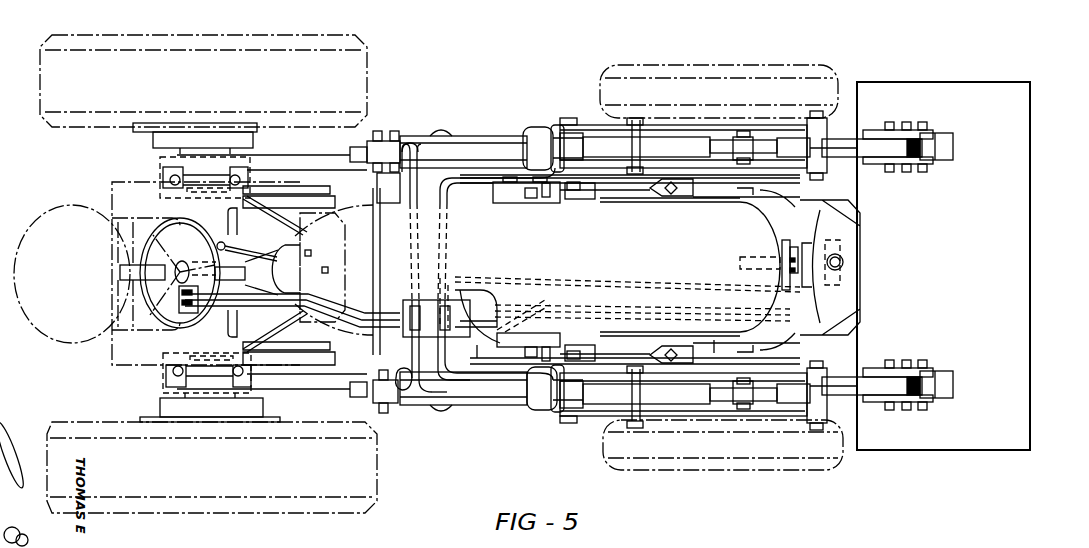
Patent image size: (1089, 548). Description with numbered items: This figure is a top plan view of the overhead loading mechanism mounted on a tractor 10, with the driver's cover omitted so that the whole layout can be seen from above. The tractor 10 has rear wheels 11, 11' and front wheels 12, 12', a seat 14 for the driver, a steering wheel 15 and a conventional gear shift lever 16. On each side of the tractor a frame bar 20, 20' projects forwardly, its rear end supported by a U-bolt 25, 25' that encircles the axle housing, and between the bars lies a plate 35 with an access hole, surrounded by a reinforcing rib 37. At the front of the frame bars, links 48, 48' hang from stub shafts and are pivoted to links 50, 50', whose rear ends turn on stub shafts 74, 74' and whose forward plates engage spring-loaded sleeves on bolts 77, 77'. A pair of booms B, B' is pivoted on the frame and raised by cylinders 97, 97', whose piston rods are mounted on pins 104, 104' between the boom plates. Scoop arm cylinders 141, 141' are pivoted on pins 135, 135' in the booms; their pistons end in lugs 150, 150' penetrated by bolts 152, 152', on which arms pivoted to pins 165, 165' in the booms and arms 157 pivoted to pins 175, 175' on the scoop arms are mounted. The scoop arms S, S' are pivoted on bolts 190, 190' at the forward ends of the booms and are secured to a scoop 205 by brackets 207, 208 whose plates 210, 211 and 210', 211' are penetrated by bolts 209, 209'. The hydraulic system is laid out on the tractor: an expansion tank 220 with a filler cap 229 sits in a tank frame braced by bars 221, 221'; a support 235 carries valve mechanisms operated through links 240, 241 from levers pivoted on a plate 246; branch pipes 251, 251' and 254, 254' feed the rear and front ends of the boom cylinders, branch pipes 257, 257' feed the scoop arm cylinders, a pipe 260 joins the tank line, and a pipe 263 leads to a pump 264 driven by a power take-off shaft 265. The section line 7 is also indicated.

The section line 7 is at (602, 350).
The tractor 10 is at (768, 225).
The rear wheel 11 is at (229, 467).
The rear wheel 11' is at (220, 81).
The front wheel 12 is at (732, 449).
The front wheel 12' is at (734, 81).
The seat 14 is at (35, 228).
The steering wheel 15 is at (175, 330).
The gear shift lever 16 is at (257, 250).
The frame bar 20 is at (272, 397).
The frame bar 20' is at (272, 146).
The U-bolt 25 is at (207, 374).
The U-bolt 25' is at (205, 177).
The plate 35 is at (378, 186).
The reinforcing rib 37 is at (378, 354).
The link 48 is at (549, 338).
The link 48' is at (547, 204).
The link 50 is at (597, 340).
The link 50' is at (598, 201).
The stub shaft 74 is at (528, 333).
The stub shaft 74' is at (526, 199).
The bolt 77 is at (671, 341).
The bolt 77' is at (671, 199).
The cylinder 97 is at (510, 379).
The cylinder 97' is at (505, 164).
The pin 104 is at (409, 410).
The pin 104' is at (410, 125).
The pin 135 is at (382, 403).
The pin 135' is at (378, 142).
The cylinder 141 is at (463, 403).
The cylinder 141' is at (463, 138).
The lug 150 is at (555, 388).
The lug 150' is at (553, 148).
The bolt 152 is at (566, 397).
The bolt 152' is at (561, 143).
The arm 157 is at (795, 416).
The pin 165 is at (645, 405).
The pin 165' is at (634, 134).
The pin 175 is at (812, 402).
The pin 175' is at (812, 137).
The bolt 190 is at (738, 410).
The bolt 190' is at (747, 129).
The scoop 205 is at (1033, 250).
The bracket 207 is at (950, 388).
The bracket 208 is at (950, 146).
The bolt 209 is at (906, 395).
The bolt 209' is at (906, 157).
The plate 210 is at (898, 361).
The plate 210' is at (898, 121).
The plate 211 is at (898, 412).
The plate 211' is at (897, 173).
The expansion tank 220 is at (846, 262).
The bar 221 is at (757, 346).
The bar 221' is at (759, 191).
The cap 229 is at (835, 284).
The support 235 is at (426, 331).
The link 240 is at (348, 310).
The link 241 is at (362, 329).
The plate 246 is at (190, 316).
The branch pipe 251 is at (444, 386).
The branch pipe 251' is at (405, 172).
The branch pipe 254 is at (495, 340).
The branch pipe 254' is at (496, 234).
The branch pipe 257 is at (438, 353).
The branch pipe 257' is at (447, 222).
The pipe 260 is at (640, 270).
The pipe 263 is at (545, 303).
The pump 264 is at (784, 276).
The power take-off shaft 265 is at (764, 257).
The boom B is at (685, 409).
The boom B' is at (685, 131).
The scoop arm S is at (833, 367).
The scoop arm S' is at (833, 163).